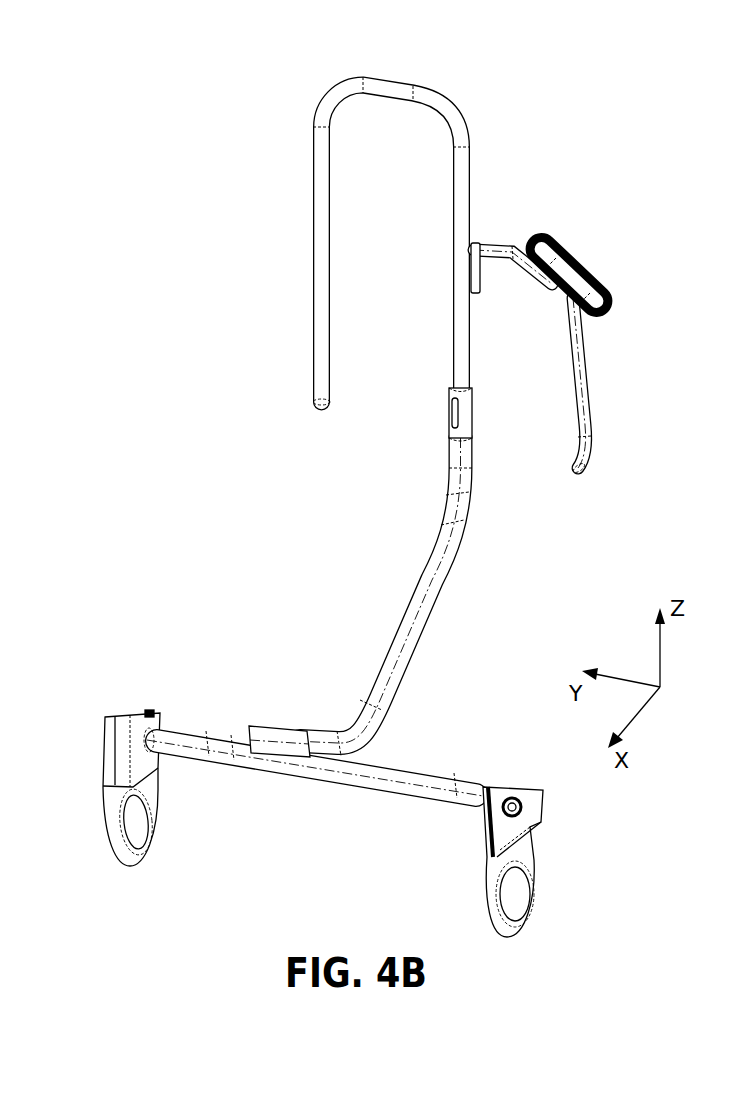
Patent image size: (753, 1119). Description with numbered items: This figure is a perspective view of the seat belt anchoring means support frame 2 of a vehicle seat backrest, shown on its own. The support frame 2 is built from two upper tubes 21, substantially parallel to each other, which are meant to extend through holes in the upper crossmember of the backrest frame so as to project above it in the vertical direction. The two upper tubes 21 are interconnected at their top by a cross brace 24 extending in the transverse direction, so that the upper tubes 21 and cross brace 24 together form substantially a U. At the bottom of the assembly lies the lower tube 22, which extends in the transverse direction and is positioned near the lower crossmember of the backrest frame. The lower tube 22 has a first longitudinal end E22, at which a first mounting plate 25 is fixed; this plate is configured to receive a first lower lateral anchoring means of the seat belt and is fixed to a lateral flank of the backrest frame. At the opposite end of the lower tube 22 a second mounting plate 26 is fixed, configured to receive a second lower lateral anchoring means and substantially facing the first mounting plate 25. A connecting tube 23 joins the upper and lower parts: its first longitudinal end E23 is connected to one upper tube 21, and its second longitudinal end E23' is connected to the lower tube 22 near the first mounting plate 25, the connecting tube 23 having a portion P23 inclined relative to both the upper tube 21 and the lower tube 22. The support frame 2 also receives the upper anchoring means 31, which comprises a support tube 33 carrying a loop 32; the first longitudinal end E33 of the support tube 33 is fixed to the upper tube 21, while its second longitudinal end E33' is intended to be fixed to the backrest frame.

The seat belt anchoring means support frame 2 is at (392, 207).
The upper tubes 21 is at (472, 173).
The cross brace 24 is at (392, 207).
The lower tube 22 is at (287, 748).
The first longitudinal end E22 is at (147, 730).
The connecting tube 23 is at (360, 597).
The portion P23 is at (360, 597).
The first longitudinal end E23 is at (505, 417).
The second longitudinal end E23' is at (289, 709).
The first mounting plate 25 is at (117, 735).
The second mounting plate 26 is at (490, 883).
The upper anchoring means 31 is at (579, 365).
The loop 32 is at (578, 250).
The support tube 33 is at (566, 368).
The first longitudinal end E33 is at (514, 248).
The second longitudinal end E33' is at (614, 498).